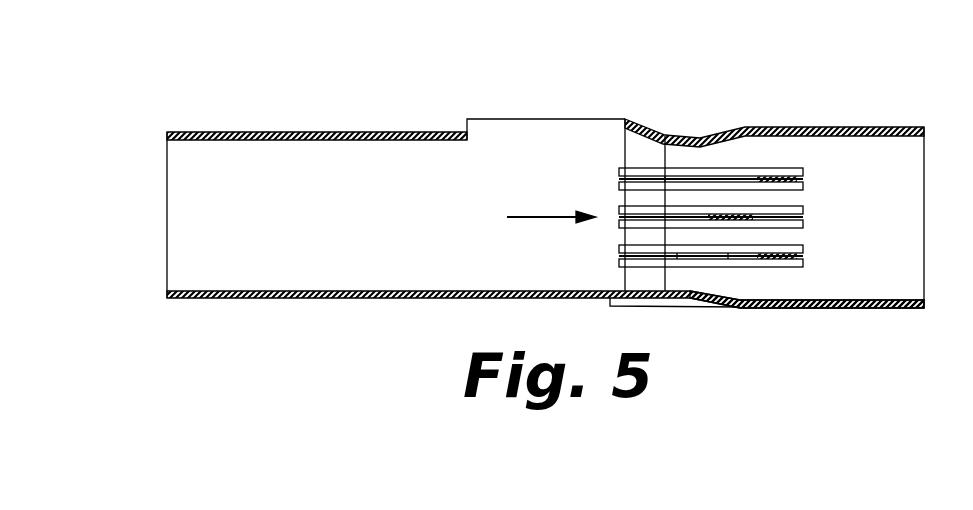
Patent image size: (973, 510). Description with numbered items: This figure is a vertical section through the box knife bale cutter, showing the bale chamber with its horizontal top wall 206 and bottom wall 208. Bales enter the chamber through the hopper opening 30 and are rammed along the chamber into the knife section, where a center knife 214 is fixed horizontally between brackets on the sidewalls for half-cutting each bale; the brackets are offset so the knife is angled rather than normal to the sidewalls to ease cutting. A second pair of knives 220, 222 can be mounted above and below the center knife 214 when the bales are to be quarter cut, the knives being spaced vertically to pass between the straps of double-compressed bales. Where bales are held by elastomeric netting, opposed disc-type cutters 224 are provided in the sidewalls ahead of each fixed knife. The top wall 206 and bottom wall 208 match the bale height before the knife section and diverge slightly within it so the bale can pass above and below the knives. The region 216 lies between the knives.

The hopper opening 30 is at (528, 178).
The top wall 206 is at (860, 128).
The bottom wall 208 is at (822, 300).
The center knife 214 is at (735, 217).
The gap region 216 is at (643, 230).
The knife 220 is at (787, 168).
The knife 222 is at (782, 247).
The disc-type cutters 224 is at (656, 217).